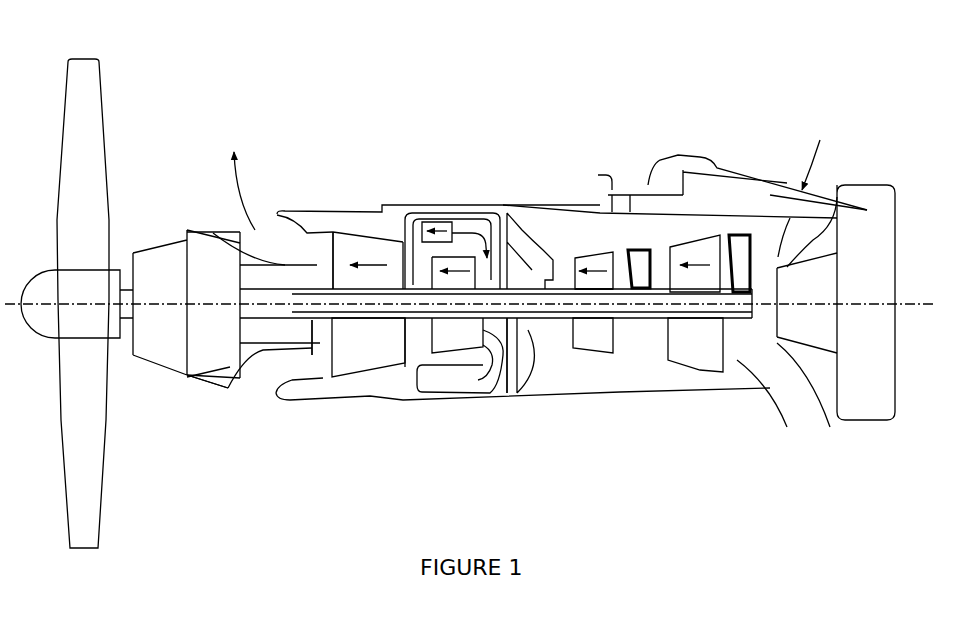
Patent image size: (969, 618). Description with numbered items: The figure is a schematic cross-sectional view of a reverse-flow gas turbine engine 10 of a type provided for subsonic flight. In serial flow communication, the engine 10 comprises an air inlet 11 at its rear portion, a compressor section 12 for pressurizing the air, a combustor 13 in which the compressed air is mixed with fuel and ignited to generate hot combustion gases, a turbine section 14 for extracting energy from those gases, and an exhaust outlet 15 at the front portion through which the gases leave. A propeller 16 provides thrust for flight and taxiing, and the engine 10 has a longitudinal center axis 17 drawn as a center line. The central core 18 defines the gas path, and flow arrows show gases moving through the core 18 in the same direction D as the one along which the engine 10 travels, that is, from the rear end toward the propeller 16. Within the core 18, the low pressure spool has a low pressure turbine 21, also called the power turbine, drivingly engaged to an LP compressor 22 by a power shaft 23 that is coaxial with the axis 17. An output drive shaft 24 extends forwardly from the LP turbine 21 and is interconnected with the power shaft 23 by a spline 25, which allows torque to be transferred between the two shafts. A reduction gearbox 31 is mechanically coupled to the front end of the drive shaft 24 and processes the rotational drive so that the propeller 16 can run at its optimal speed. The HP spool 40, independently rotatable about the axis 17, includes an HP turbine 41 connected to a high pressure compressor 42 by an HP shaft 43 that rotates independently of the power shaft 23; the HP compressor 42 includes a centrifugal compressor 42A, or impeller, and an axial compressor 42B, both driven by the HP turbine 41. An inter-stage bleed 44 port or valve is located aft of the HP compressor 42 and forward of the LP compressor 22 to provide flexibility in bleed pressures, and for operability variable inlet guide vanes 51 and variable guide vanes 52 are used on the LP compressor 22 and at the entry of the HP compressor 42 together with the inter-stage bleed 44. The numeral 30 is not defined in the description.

The engine 10 is at (153, 98).
The propeller 16 is at (43, 270).
The reduction gearbox 31 is at (213, 253).
The output drive shaft 24 is at (280, 275).
The low pressure turbine 21 is at (347, 240).
The central core 18 is at (380, 252).
The power shaft 23 is at (412, 212).
The HP turbine 41 is at (452, 242).
The combustor 13 is at (467, 217).
The high pressure compressor 42 is at (623, 190).
The centrifugal compressor 42A is at (552, 320).
The axial compressor 42B is at (600, 345).
The inter-stage bleed 44 is at (623, 190).
The HP spool 40 is at (629, 275).
The variable guide vanes 52 is at (650, 233).
The variable inlet guide vanes 51 is at (743, 256).
The LP compressor 22 is at (707, 230).
The air inlet 11 is at (838, 173).
The longitudinal center axis 17 is at (912, 302).
The power turbine 30 is at (660, 320).
The exhaust outlet 15 is at (245, 403).
The spline 25 is at (312, 355).
The HP shaft 43 is at (537, 323).
The turbine section 14 is at (477, 427).
The compressor section 12 is at (723, 425).
The direction D is at (735, 494).